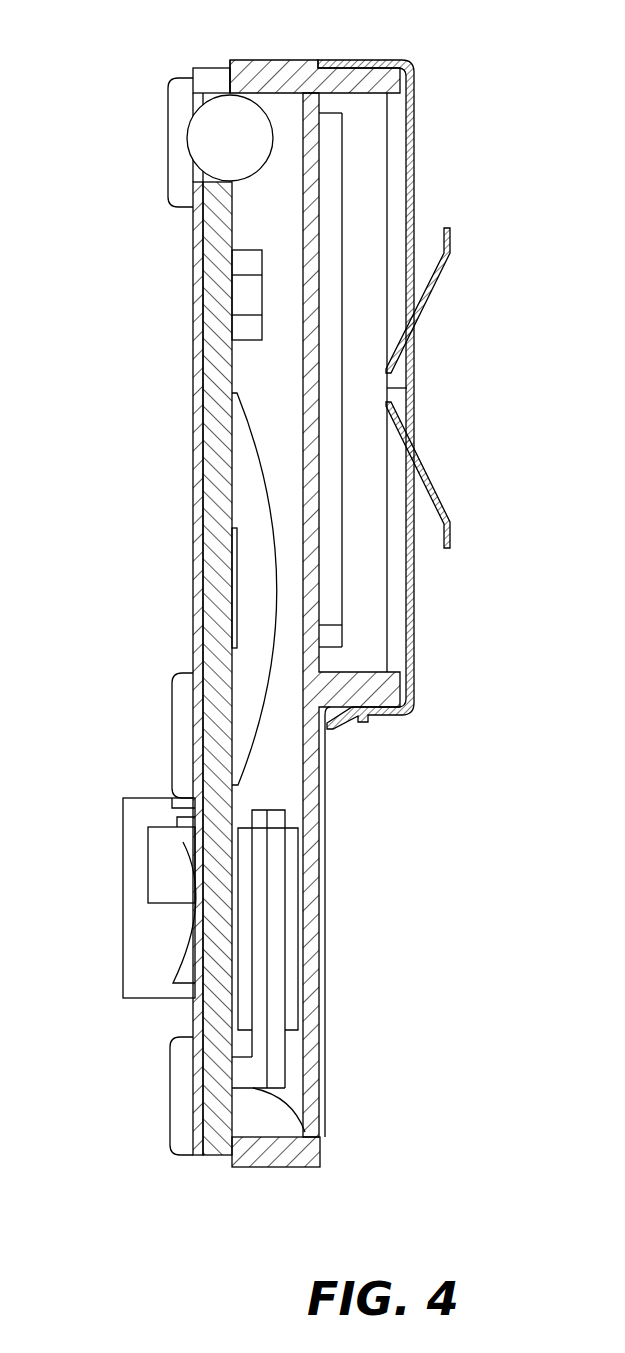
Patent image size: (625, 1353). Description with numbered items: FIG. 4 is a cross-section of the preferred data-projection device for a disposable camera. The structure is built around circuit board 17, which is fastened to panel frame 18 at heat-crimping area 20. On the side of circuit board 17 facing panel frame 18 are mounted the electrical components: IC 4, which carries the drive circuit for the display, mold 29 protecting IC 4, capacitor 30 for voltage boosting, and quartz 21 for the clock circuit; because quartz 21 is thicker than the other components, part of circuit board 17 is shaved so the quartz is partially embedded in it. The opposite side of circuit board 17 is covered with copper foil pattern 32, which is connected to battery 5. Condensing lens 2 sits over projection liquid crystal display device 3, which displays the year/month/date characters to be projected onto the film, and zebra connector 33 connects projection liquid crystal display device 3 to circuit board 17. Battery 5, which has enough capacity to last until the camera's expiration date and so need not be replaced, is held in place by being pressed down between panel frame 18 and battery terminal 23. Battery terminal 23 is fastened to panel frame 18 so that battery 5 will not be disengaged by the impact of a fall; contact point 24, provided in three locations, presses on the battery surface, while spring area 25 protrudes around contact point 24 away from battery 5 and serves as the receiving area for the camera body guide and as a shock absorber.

The condensing lens 2 is at (133, 885).
The projection liquid crystal display device 3 is at (277, 913).
The IC 4 is at (232, 580).
The battery 5 is at (373, 145).
The circuit board 17 is at (213, 1156).
The panel frame 18 is at (285, 1160).
The heat-crimping area 20 is at (178, 132).
The quartz 21 is at (233, 113).
The battery terminal 23 is at (325, 813).
The contact point 24 is at (408, 388).
The spring area 25 is at (452, 232).
The mold 29 is at (242, 452).
The capacitor 30 is at (250, 298).
The copper foil pattern 32 is at (197, 1157).
The zebra connector 33 is at (305, 1132).